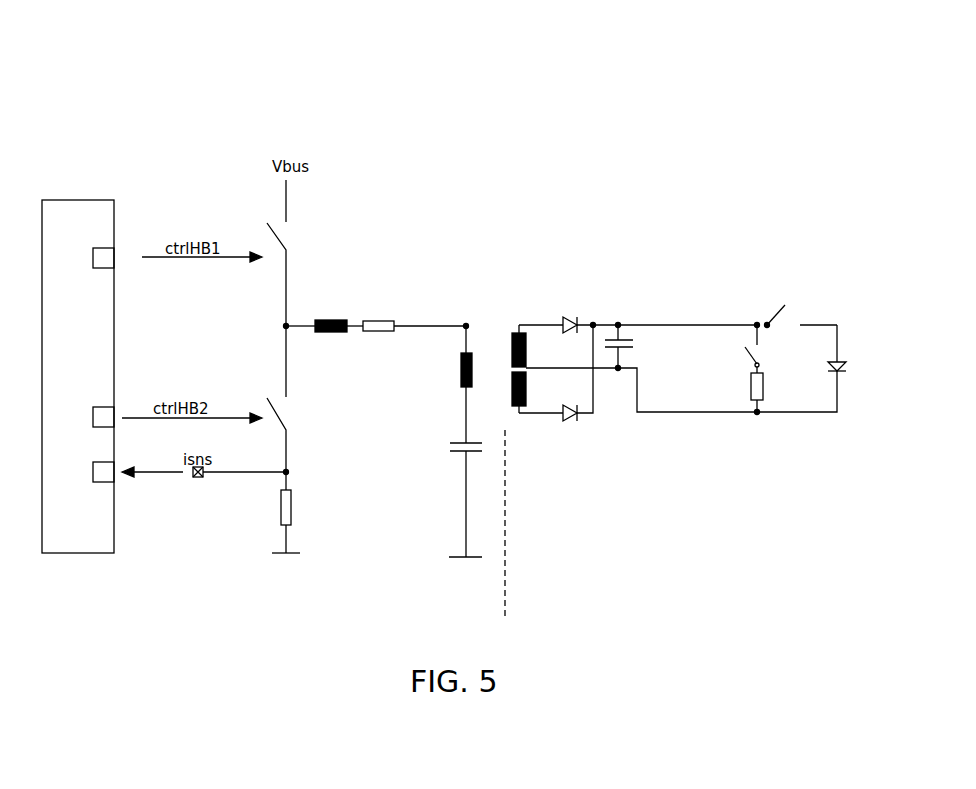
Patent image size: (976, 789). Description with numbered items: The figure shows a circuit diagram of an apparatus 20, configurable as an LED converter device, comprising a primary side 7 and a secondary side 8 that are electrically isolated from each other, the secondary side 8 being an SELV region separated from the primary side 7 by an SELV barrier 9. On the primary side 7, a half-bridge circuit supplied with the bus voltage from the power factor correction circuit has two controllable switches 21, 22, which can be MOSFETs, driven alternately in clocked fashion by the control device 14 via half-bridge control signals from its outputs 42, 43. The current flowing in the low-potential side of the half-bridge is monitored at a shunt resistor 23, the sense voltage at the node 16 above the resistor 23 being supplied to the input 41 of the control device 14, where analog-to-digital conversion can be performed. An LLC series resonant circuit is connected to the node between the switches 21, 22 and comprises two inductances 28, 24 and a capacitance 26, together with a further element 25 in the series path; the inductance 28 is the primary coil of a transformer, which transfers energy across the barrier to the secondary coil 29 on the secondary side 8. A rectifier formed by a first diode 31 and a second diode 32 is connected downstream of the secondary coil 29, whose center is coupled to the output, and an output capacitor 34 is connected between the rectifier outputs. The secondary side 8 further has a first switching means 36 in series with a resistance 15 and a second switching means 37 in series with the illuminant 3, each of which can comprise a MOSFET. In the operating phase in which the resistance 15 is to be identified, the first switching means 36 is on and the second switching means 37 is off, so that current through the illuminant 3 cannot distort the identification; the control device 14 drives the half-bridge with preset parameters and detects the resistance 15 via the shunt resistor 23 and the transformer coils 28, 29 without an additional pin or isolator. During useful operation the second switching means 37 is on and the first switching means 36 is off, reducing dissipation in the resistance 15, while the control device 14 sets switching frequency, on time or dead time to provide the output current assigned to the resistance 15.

The apparatus 20 is at (66, 74).
The primary side 7 is at (126, 145).
The secondary side 8 is at (526, 205).
The SELV barrier 9 is at (505, 596).
The control device 14 is at (103, 551).
The output 42 is at (93, 258).
The output 43 is at (93, 418).
The input 41 is at (93, 477).
The controllable switch 21 is at (268, 230).
The controllable switch 22 is at (268, 404).
The sense node 16 is at (289, 474).
The shunt resistor 23 is at (281, 508).
The inductance 24 is at (333, 320).
The resistor 25 is at (388, 321).
The primary coil 28 is at (461, 372).
The capacitance 26 is at (455, 443).
The secondary coil 29 is at (512, 326).
The first diode 31 is at (571, 318).
The second diode 32 is at (575, 420).
The output capacitor 34 is at (633, 348).
The second switching means 37 is at (772, 314).
The first switching means 36 is at (746, 360).
The resistance 15 is at (752, 405).
The illuminant 3 is at (846, 362).